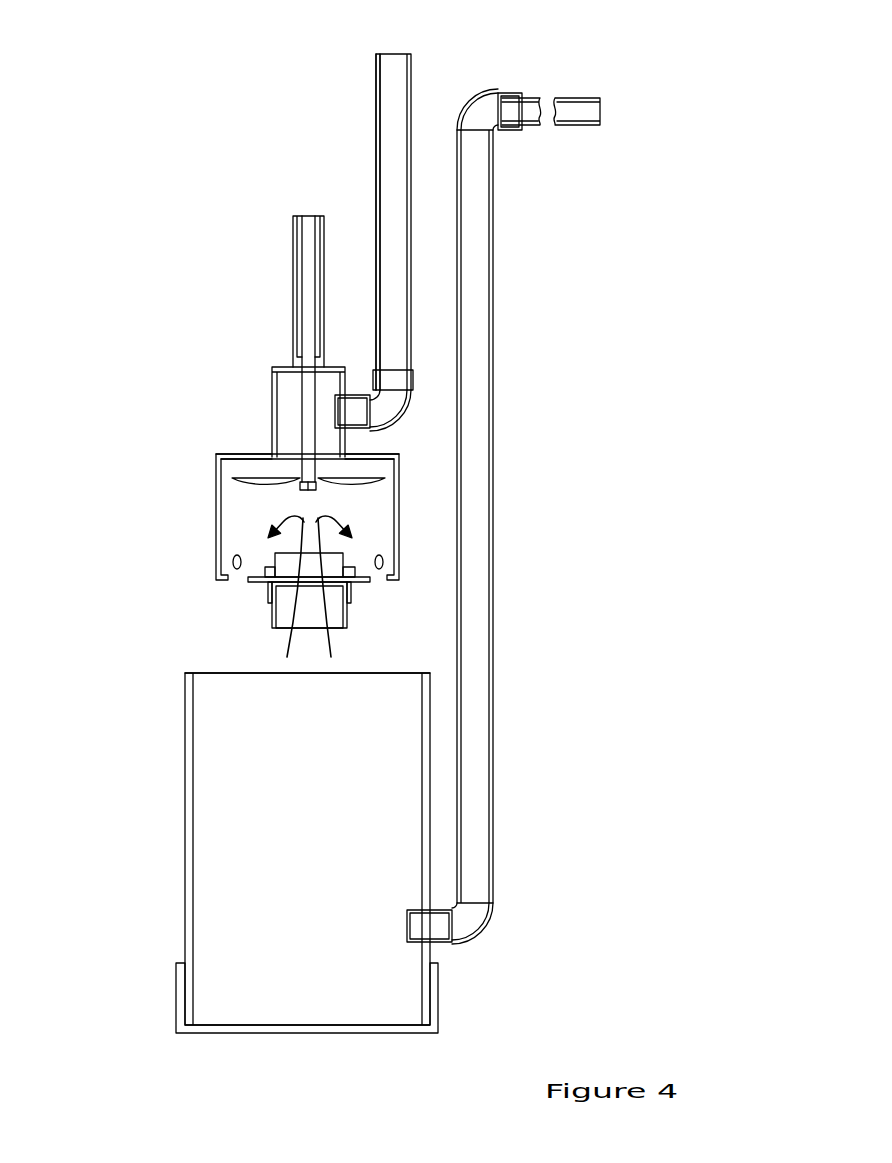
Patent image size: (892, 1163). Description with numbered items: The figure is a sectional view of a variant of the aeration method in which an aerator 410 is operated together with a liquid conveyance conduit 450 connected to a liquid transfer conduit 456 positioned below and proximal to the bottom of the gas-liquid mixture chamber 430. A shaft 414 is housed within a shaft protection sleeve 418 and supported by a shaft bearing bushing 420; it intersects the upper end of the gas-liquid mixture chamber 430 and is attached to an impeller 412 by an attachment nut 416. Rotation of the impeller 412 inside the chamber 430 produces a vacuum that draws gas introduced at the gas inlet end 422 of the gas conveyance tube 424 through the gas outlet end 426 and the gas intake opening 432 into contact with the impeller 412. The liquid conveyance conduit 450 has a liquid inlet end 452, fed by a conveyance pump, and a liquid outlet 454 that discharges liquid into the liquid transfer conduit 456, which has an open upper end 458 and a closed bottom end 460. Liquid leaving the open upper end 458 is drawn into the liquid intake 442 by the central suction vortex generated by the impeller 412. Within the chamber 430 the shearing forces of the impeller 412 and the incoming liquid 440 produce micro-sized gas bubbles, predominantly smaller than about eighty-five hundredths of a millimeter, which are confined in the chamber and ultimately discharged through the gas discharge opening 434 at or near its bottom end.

The aerator 410 is at (98, 338).
The impeller 412 is at (277, 477).
The shaft 414 is at (307, 224).
The attachment nut 416 is at (320, 488).
The shaft protection sleeve 418 is at (293, 272).
The shaft bearing bushing 420 is at (300, 357).
The gas inlet end 422 is at (393, 70).
The gas conveyance tube 424 is at (390, 292).
The gas outlet end 426 is at (345, 412).
The gas-liquid mixture chamber 430 is at (216, 507).
The gas intake opening 432 is at (295, 457).
The gas discharge opening 434 is at (235, 575).
The incoming liquid 440 is at (290, 641).
The liquid intake 442 is at (287, 606).
The liquid conveyance conduit 450 is at (477, 410).
The liquid inlet end 452 is at (600, 112).
The liquid outlet 454 is at (427, 928).
The liquid transfer conduit 456 is at (185, 865).
The open upper end 458 is at (255, 673).
The closed bottom end 460 is at (176, 988).